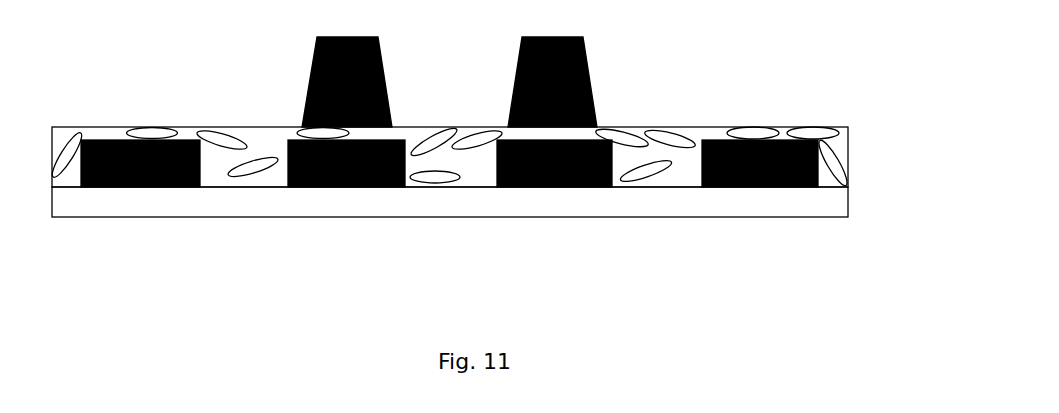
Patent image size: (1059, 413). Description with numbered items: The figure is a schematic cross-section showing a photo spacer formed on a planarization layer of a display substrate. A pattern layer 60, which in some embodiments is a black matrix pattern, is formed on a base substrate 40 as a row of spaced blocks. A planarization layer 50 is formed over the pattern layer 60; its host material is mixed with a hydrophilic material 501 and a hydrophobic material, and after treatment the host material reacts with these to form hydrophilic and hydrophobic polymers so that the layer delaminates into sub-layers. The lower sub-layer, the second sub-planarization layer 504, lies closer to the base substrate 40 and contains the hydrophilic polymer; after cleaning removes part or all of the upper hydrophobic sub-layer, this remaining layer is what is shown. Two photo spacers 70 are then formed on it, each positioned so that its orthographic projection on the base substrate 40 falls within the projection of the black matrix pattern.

The base substrate 40 is at (796, 200).
The planarization layer 50 is at (508, 156).
The second sub-planarization layer 504 is at (822, 143).
The hydrophilic material 501 is at (430, 177).
The pattern layer 60 is at (550, 187).
The photo spacer 70 is at (588, 68).